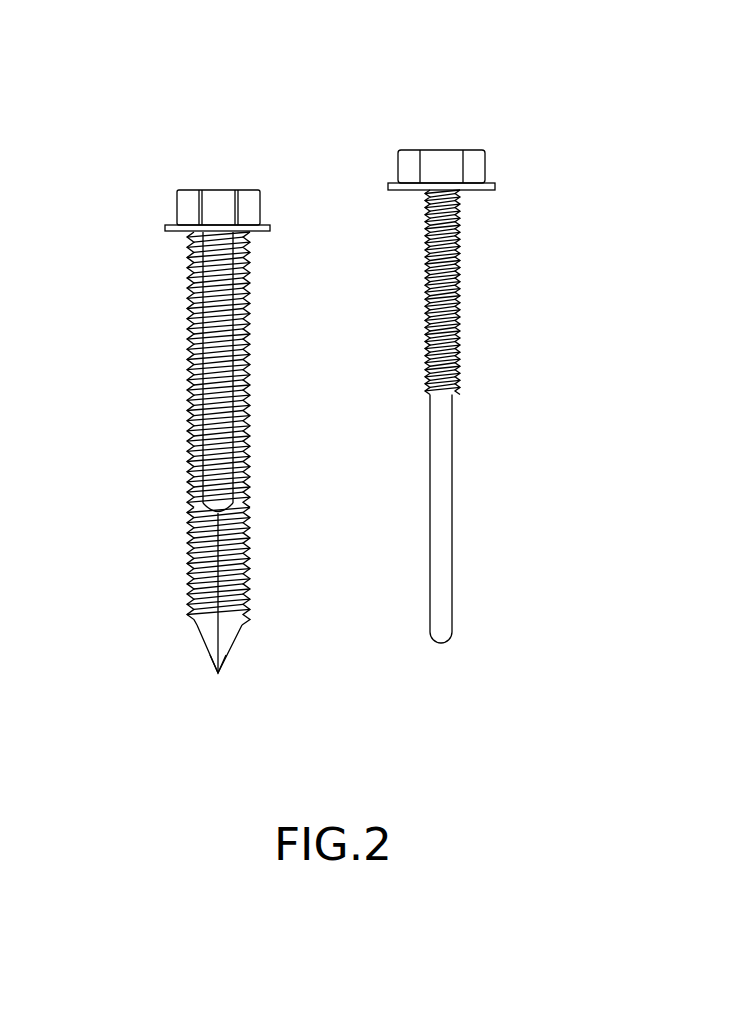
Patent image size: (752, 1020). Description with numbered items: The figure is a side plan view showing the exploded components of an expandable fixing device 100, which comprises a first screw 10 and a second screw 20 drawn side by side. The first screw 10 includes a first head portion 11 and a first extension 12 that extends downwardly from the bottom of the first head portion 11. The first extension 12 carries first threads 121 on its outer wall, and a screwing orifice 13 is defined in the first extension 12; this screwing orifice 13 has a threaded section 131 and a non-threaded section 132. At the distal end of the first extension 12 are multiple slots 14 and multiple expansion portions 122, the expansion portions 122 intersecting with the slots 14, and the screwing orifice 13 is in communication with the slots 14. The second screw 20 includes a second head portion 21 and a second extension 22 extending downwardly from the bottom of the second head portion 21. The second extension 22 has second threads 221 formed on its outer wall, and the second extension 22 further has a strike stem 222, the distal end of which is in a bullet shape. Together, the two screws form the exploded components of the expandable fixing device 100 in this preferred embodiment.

The expandable fixing device 100 is at (117, 24).
The first screw 10 is at (146, 204).
The first head portion 11 is at (250, 197).
The first extension 12 is at (195, 459).
The first threads 121 is at (205, 527).
The expansion portions 122 is at (198, 628).
The screwing orifice 13 is at (217, 203).
The threaded section 131 is at (203, 285).
The non-threaded section 132 is at (203, 455).
The slots 14 is at (222, 629).
The second screw 20 is at (515, 167).
The second head portion 21 is at (438, 157).
The second extension 22 is at (452, 333).
The second threads 221 is at (440, 338).
The strike stem 222 is at (445, 620).